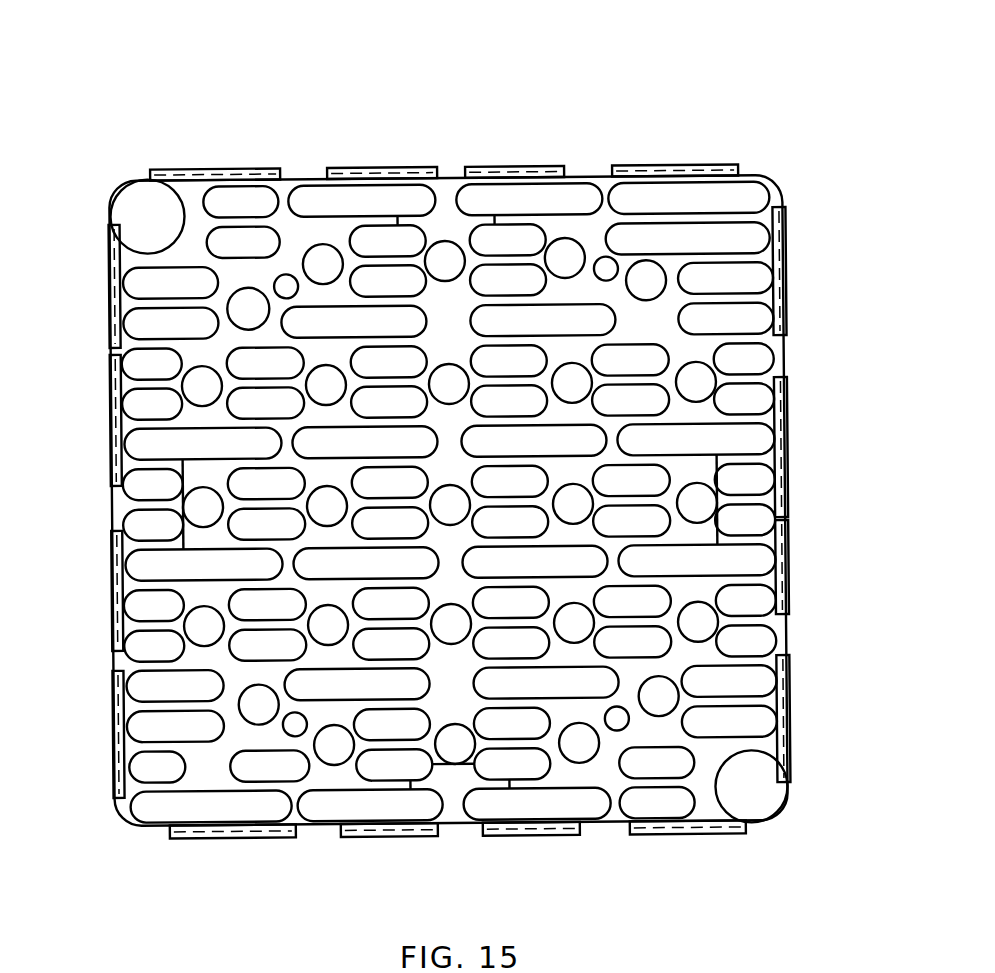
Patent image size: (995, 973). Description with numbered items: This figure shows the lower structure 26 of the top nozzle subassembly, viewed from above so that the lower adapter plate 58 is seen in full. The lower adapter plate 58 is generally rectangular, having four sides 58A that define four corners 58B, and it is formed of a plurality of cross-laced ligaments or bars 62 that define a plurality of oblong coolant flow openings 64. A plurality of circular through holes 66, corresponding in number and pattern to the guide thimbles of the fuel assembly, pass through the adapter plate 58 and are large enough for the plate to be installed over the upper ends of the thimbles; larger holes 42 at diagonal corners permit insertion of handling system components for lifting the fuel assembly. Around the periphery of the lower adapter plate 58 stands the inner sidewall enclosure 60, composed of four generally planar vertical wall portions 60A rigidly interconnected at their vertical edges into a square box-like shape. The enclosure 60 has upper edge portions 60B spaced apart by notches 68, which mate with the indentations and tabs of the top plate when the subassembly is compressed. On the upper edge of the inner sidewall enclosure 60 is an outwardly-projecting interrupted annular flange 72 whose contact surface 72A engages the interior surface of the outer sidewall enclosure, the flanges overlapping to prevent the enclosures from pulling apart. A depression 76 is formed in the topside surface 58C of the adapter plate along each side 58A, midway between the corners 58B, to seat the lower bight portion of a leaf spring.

The lower structure 26 is at (648, 148).
The hole 42 is at (150, 177).
The lower adapter plate 58 is at (447, 832).
The side 58A is at (133, 582).
The corner 58B is at (186, 248).
The topside surface 58C is at (590, 777).
The inner sidewall enclosure 60 is at (102, 491).
The vertical wall portion 60A is at (300, 167).
The upper edge portion 60B is at (706, 167).
The ligament 62 is at (512, 260).
The coolant flow opening 64 is at (378, 256).
The circular through hole 66 is at (560, 370).
The notch 68 is at (789, 525).
The outwardly-projecting interrupted annular flange 72 is at (789, 320).
The contact surface 72A is at (789, 254).
The depression 76 is at (448, 200).